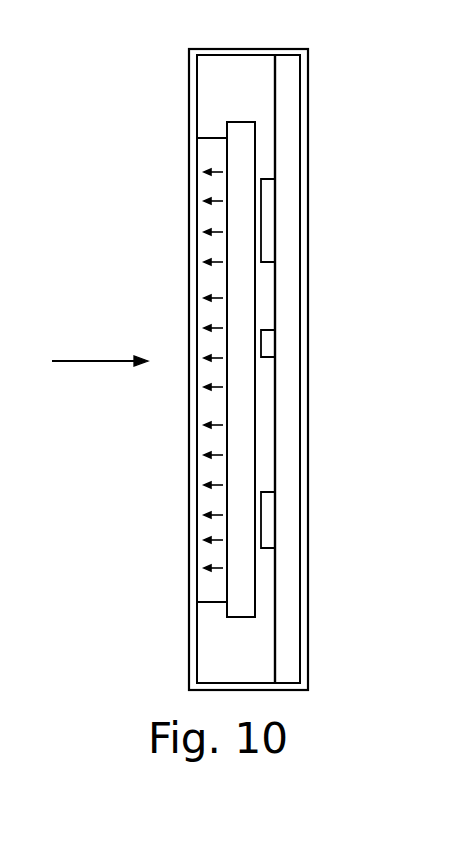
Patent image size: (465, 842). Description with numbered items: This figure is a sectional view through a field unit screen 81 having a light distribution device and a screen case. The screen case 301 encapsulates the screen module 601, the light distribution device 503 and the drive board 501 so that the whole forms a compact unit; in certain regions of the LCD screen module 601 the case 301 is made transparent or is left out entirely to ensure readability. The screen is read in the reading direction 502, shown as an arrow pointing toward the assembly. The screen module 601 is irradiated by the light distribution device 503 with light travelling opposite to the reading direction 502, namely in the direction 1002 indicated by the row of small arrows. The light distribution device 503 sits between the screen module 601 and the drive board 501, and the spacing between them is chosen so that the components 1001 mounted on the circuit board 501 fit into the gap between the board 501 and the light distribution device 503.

The display assembly 81 is at (127, 242).
The screen case 301 is at (190, 642).
The drive board 501 is at (287, 82).
The reading direction 502 is at (98, 360).
The light distribution device 503 is at (242, 126).
The screen module 601 is at (210, 157).
The components 1001 is at (267, 220).
The direction of irradiation 1002 is at (202, 413).